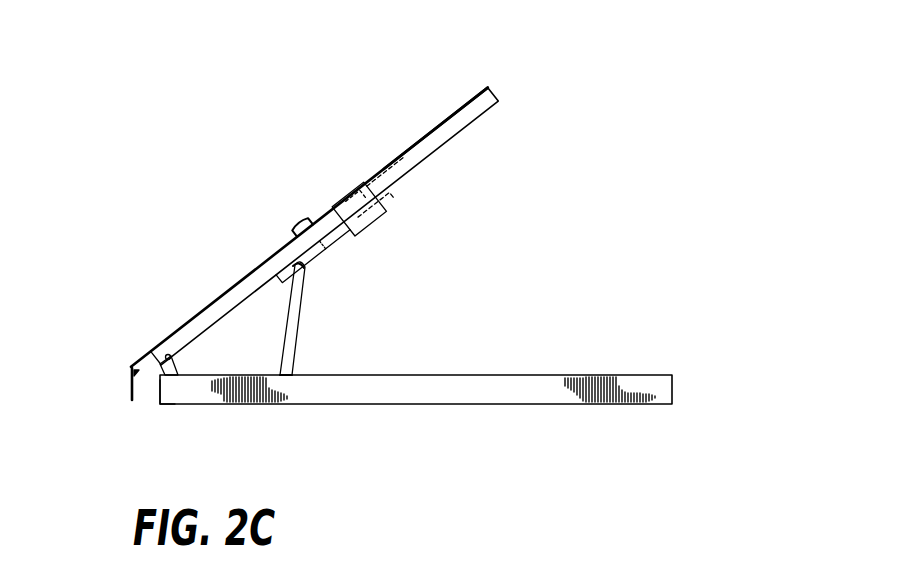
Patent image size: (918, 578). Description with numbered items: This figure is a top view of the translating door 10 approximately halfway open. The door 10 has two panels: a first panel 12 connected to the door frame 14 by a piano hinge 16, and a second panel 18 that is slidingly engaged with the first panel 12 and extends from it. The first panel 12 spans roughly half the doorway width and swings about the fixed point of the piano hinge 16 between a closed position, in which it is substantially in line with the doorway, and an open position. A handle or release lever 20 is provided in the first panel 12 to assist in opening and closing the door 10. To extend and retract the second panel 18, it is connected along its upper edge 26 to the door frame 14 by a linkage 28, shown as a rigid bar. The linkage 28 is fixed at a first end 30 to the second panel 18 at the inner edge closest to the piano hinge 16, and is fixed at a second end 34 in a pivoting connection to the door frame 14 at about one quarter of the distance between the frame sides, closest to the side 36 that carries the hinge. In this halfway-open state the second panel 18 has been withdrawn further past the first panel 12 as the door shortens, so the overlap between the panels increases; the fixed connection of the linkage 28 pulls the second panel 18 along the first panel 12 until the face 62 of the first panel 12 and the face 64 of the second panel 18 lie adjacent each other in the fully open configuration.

The translating door 10 is at (674, 163).
The first panel 12 is at (212, 305).
The door frame 14 is at (521, 392).
The piano hinge 16 is at (132, 368).
The second panel 18 is at (472, 99).
The release lever 20 is at (296, 219).
The upper edge 26 is at (310, 258).
The linkage 28 is at (296, 316).
The first end 30 is at (296, 262).
The second end 34 is at (288, 370).
The side 36 is at (163, 392).
The face 62 is at (426, 135).
The face 64 is at (190, 352).